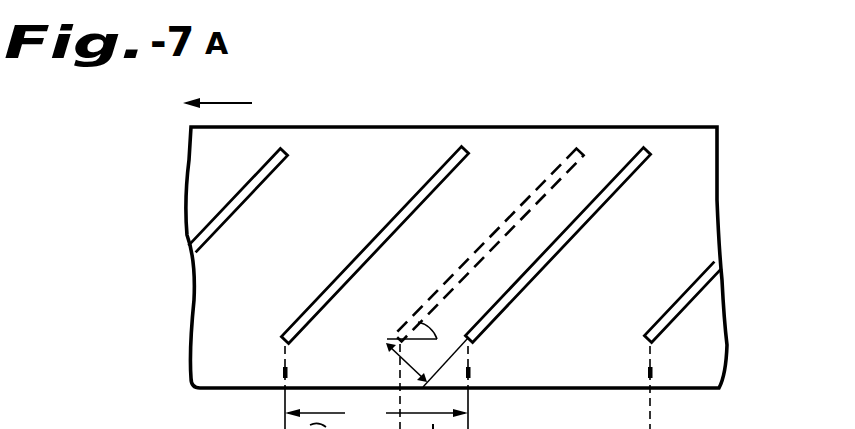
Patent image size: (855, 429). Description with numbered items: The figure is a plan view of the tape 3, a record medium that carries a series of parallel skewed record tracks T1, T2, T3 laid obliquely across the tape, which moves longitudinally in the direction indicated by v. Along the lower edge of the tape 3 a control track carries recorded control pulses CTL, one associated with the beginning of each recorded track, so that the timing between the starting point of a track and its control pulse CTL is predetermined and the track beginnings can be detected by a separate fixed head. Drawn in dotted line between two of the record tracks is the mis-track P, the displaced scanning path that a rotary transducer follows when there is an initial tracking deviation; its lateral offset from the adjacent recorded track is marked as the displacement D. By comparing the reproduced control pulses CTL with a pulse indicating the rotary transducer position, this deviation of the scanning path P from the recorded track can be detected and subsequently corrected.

The tape 3 is at (688, 128).
The tape transport velocity v is at (201, 100).
The first recorded track T1 is at (288, 150).
The second recorded track T2 is at (469, 151).
The third recorded track T3 is at (645, 151).
The mis-track P is at (562, 146).
The track displacement distance D is at (406, 360).
The control pulse CTL is at (281, 377).